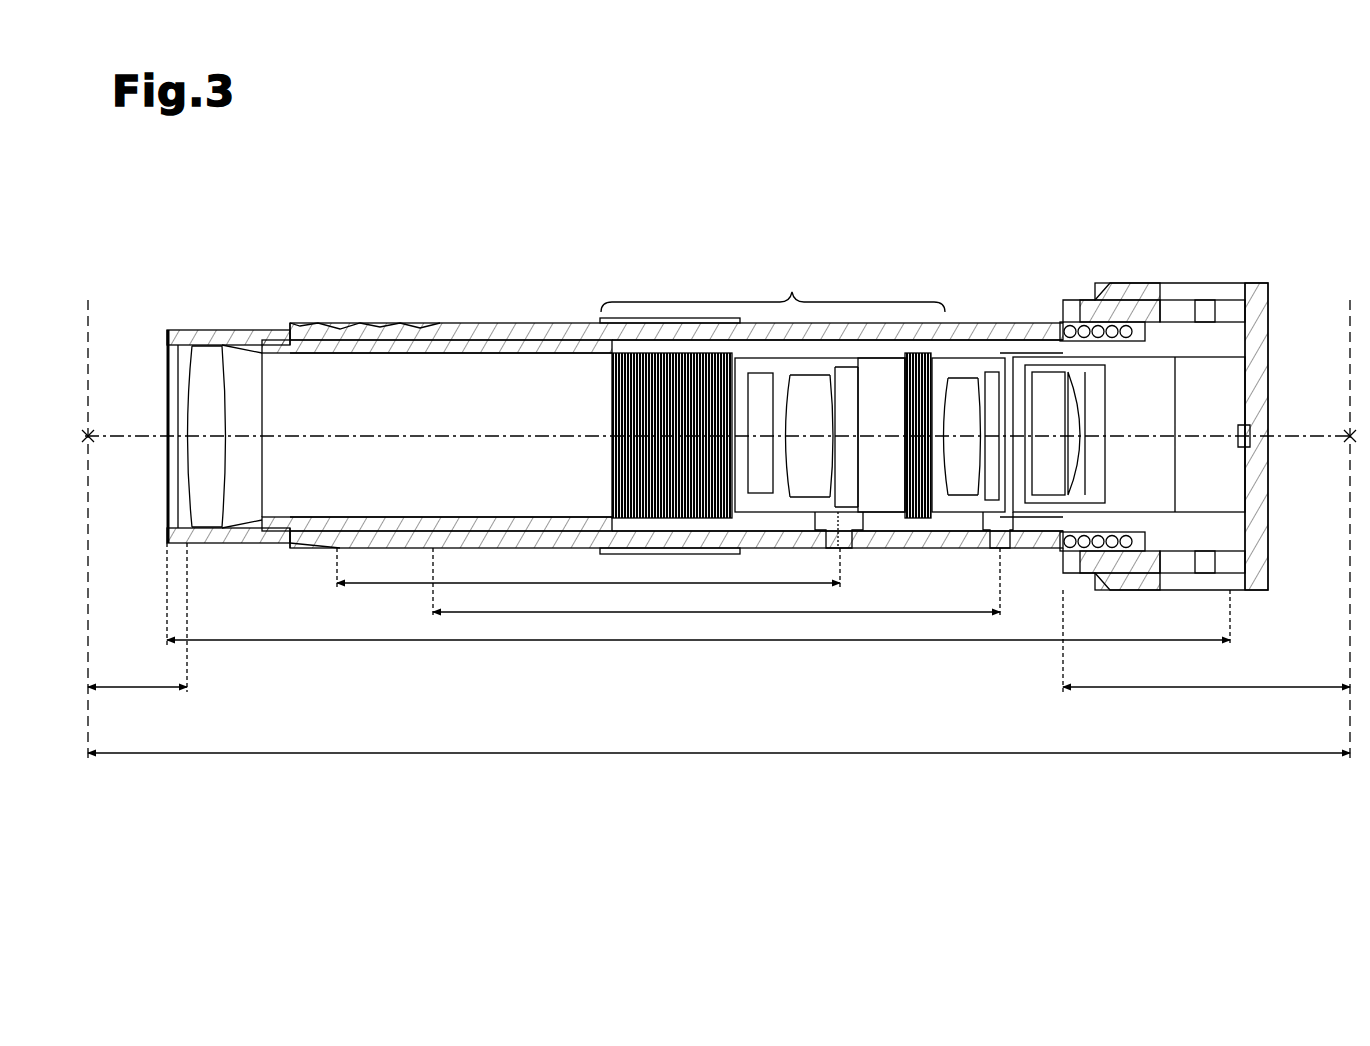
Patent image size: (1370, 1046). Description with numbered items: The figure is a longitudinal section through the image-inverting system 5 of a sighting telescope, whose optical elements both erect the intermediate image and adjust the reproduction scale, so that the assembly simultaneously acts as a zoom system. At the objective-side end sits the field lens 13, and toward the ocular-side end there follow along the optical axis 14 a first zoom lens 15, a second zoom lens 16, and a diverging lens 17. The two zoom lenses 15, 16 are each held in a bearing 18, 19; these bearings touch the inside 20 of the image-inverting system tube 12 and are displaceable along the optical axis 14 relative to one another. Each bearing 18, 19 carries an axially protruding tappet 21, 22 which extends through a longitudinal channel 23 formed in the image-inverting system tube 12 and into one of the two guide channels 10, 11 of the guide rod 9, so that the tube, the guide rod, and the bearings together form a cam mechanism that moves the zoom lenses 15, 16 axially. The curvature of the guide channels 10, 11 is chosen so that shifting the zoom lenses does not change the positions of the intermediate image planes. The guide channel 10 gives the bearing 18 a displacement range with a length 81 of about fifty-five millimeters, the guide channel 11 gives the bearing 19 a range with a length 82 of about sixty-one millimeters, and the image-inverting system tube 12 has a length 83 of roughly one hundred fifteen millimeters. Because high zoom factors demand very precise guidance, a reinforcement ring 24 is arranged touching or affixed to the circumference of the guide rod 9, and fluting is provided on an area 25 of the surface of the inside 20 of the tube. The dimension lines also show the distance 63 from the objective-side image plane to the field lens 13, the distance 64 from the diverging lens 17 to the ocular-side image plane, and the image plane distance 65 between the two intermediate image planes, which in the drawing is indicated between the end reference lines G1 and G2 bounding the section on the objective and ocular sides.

The image-inverting system 5 is at (748, 228).
The guide rod 9 is at (558, 322).
The guide channel 10 is at (330, 318).
The guide channel 11 is at (412, 322).
The image-inverting system tube 12 is at (227, 325).
The field lens 13 is at (163, 468).
The optical axis 14 is at (280, 440).
The first zoom lens 15 is at (832, 415).
The second zoom lens 16 is at (998, 383).
The diverging lens 17 is at (1078, 405).
The bearing 18 is at (805, 335).
The bearing 19 is at (1000, 337).
The inside 20 is at (500, 375).
The tappet 21 is at (805, 555).
The tappet 22 is at (1027, 548).
The longitudinal channel 23 is at (338, 543).
The reinforcement ring 24 is at (655, 562).
The area 25 is at (772, 405).
The distance 63 is at (135, 690).
The distance 64 is at (1215, 690).
The image plane distance 65 is at (372, 752).
The length 81 is at (490, 577).
The length 82 is at (548, 600).
The length 83 is at (635, 628).
The first boundary plane G1 is at (92, 343).
The second boundary plane G2 is at (1346, 343).